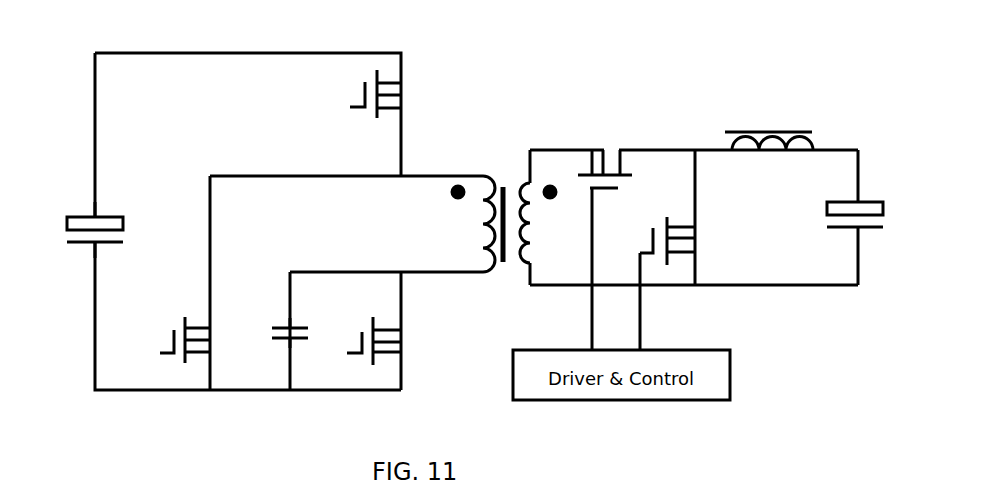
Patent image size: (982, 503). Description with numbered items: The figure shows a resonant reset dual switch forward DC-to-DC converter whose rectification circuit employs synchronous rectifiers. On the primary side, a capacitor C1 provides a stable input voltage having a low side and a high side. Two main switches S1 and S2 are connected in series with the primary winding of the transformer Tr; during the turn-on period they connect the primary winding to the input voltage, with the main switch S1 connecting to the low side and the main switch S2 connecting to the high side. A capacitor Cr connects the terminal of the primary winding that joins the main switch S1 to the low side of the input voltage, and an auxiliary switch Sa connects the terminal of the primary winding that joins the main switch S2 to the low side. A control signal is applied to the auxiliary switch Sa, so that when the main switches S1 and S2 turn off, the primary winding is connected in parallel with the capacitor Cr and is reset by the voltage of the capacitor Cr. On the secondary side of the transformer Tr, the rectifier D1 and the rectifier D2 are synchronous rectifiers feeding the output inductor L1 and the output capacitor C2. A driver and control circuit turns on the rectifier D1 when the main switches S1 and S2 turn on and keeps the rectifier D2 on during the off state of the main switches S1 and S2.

The capacitor C1 is at (71, 239).
The main switch S2 is at (354, 94).
The auxiliary switch Sa is at (182, 325).
The capacitor Cr is at (277, 318).
The main switch S1 is at (368, 328).
The transformer Tr is at (504, 200).
The rectifier D1 is at (599, 150).
The rectifier D2 is at (680, 241).
The output inductor L1 is at (769, 124).
The output capacitor C2 is at (863, 217).